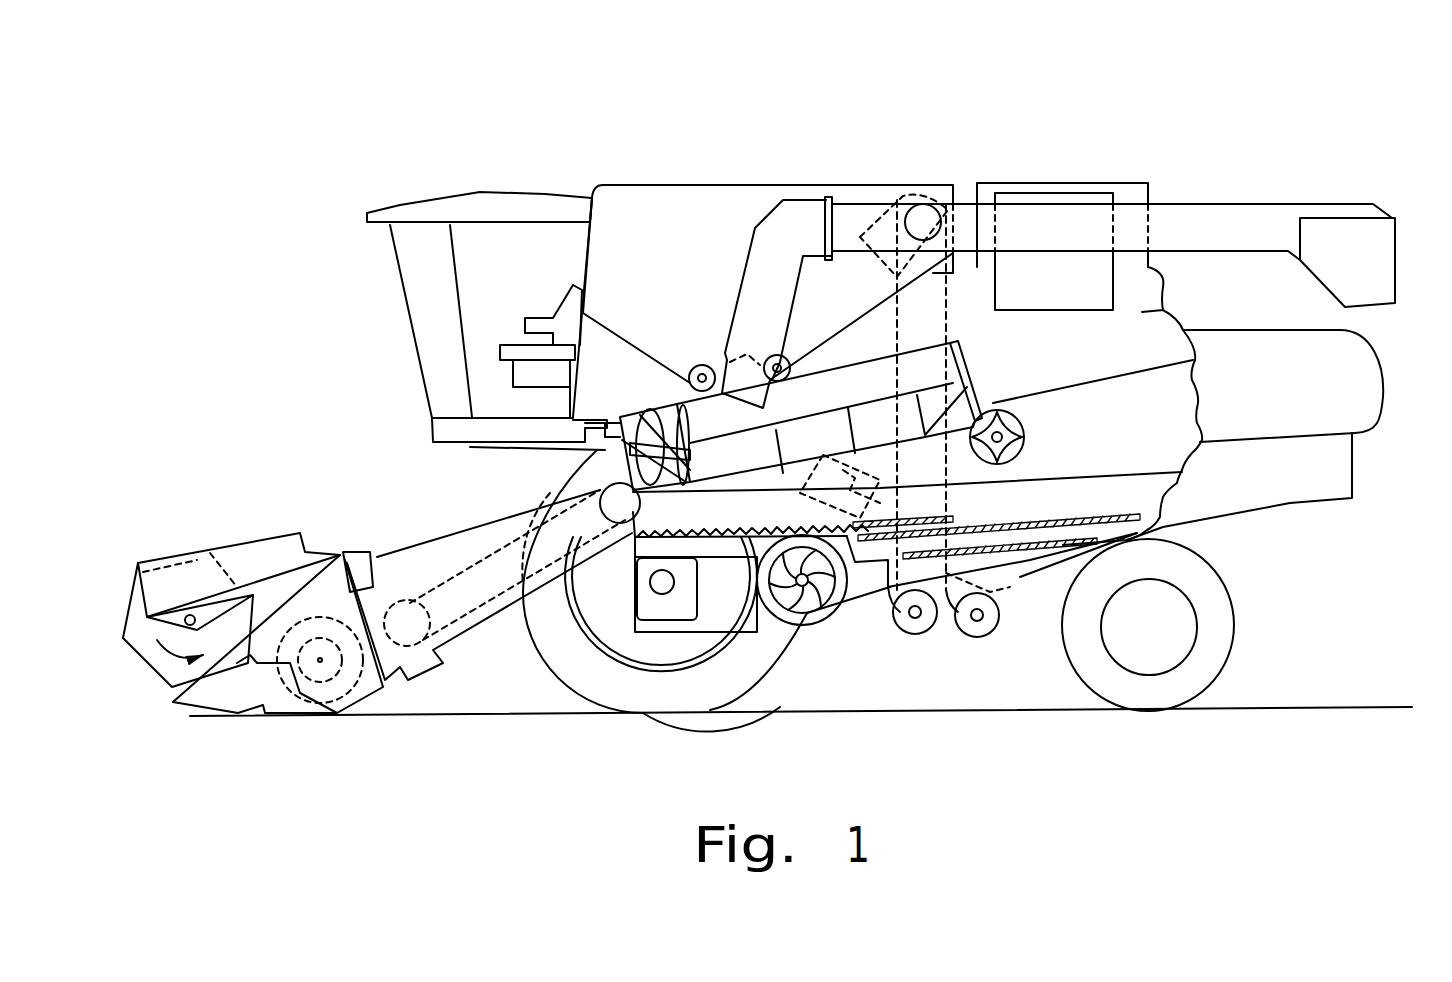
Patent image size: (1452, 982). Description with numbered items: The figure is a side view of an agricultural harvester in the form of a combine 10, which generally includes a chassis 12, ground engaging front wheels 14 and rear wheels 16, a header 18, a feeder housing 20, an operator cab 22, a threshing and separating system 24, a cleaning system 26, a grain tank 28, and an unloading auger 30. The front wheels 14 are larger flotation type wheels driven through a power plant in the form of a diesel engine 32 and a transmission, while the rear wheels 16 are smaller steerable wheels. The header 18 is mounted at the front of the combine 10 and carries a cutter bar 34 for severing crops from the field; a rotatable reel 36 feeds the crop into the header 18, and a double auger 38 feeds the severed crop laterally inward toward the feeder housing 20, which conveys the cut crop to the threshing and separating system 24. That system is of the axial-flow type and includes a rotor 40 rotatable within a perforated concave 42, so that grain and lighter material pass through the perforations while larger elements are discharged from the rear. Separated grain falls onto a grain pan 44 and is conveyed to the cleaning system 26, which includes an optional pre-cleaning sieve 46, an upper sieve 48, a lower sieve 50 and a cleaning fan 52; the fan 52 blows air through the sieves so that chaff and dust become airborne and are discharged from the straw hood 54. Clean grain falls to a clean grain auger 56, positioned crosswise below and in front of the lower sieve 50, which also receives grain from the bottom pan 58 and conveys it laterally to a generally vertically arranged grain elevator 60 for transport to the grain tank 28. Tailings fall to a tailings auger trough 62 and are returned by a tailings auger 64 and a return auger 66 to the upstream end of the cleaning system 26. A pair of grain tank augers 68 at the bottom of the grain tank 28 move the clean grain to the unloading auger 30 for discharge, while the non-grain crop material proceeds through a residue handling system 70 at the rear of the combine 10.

The combine 10 is at (470, 172).
The chassis 12 is at (1160, 540).
The front wheels 14 is at (565, 672).
The rear wheels 16 is at (1232, 648).
The header 18 is at (226, 528).
The feeder housing 20 is at (446, 542).
The operator cab 22 is at (407, 296).
The threshing and separating system 24 is at (560, 464).
The cleaning system 26 is at (860, 645).
The grain tank 28 is at (650, 192).
The unloading auger 30 is at (1243, 210).
The diesel engine 32 is at (1043, 196).
The cutter bar 34 is at (247, 712).
The reel 36 is at (137, 604).
The double auger 38 is at (320, 687).
The rotor 40 is at (648, 425).
The concave 42 is at (840, 395).
The grain pan 44 is at (628, 548).
The pre-cleaning sieve 46 is at (955, 518).
The upper sieve 48 is at (1060, 521).
The lower sieve 50 is at (1027, 563).
The cleaning fan 52 is at (803, 605).
The straw hood 54 is at (1362, 373).
The clean grain auger 56 is at (922, 632).
The bottom pan 58 is at (1058, 560).
The grain elevator 60 is at (948, 318).
The tailings auger trough 62 is at (1077, 558).
The tailings auger 64 is at (974, 637).
The return auger 66 is at (884, 495).
The grain tank augers 68 is at (701, 365).
The residue handling system 70 is at (1325, 517).